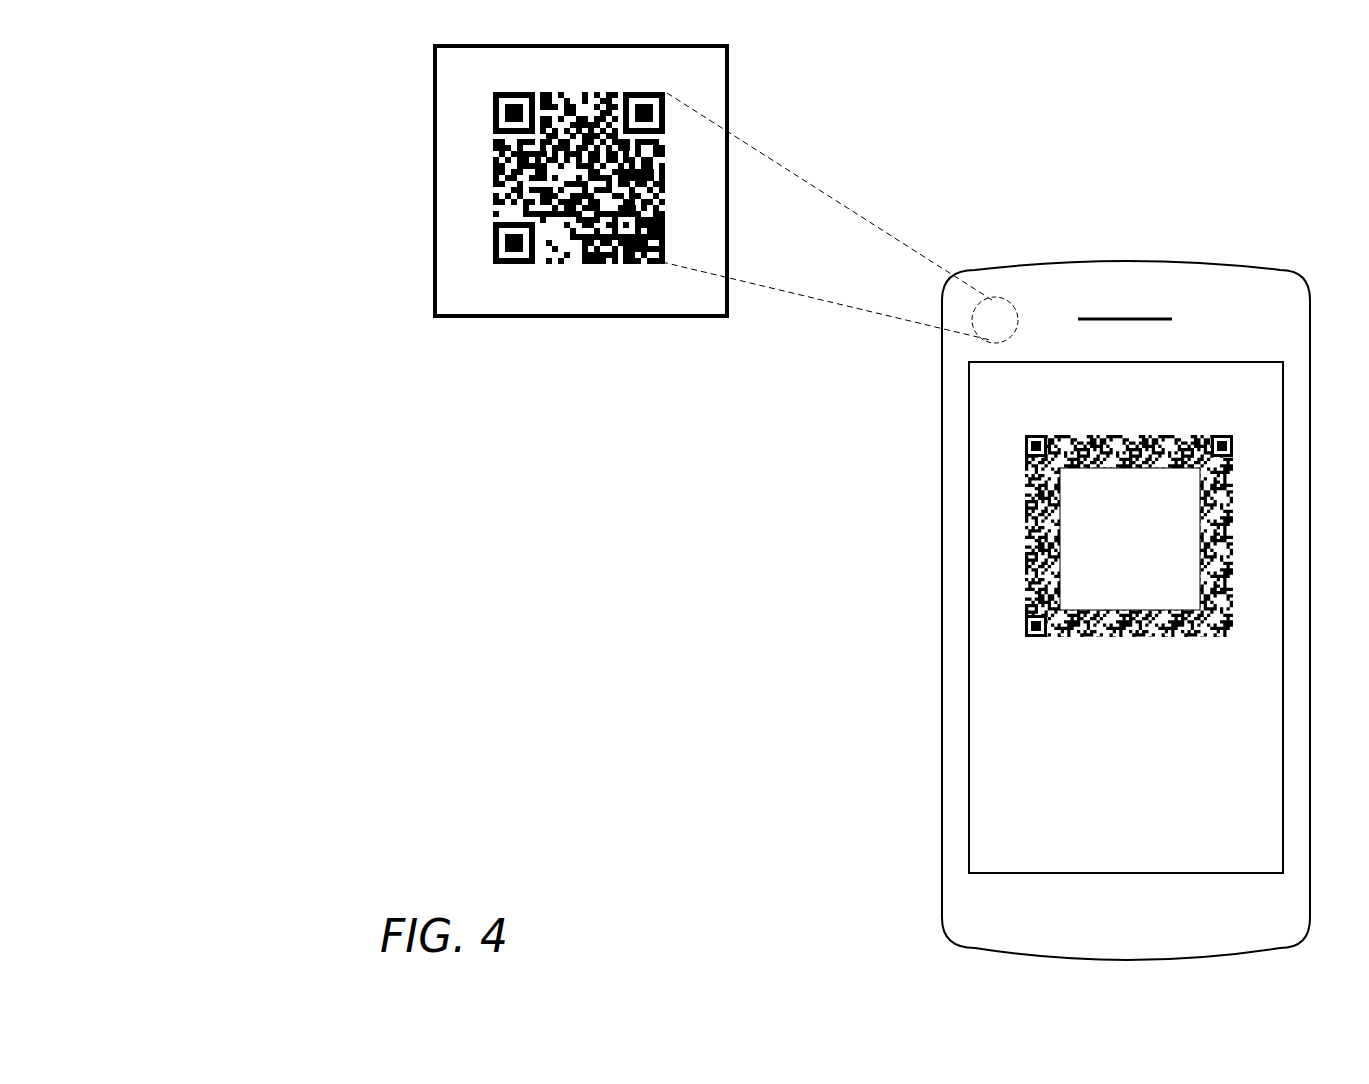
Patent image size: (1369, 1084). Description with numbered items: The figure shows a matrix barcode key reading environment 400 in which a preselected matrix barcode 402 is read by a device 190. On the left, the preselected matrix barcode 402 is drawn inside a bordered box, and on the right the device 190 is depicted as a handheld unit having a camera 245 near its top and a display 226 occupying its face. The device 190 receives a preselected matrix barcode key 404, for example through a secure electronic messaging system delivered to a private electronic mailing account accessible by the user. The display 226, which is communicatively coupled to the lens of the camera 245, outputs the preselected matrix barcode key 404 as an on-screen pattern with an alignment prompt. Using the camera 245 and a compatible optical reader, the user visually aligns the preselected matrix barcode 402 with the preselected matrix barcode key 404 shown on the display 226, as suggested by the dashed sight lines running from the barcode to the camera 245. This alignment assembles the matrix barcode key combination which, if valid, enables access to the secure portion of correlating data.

The matrix barcode key reading environment 400 is at (282, 90).
The preselected matrix barcode 402 is at (653, 319).
The device 190 is at (1178, 262).
The camera 245 is at (1000, 298).
The display 226 is at (1141, 406).
The preselected matrix barcode key 404 is at (1170, 637).